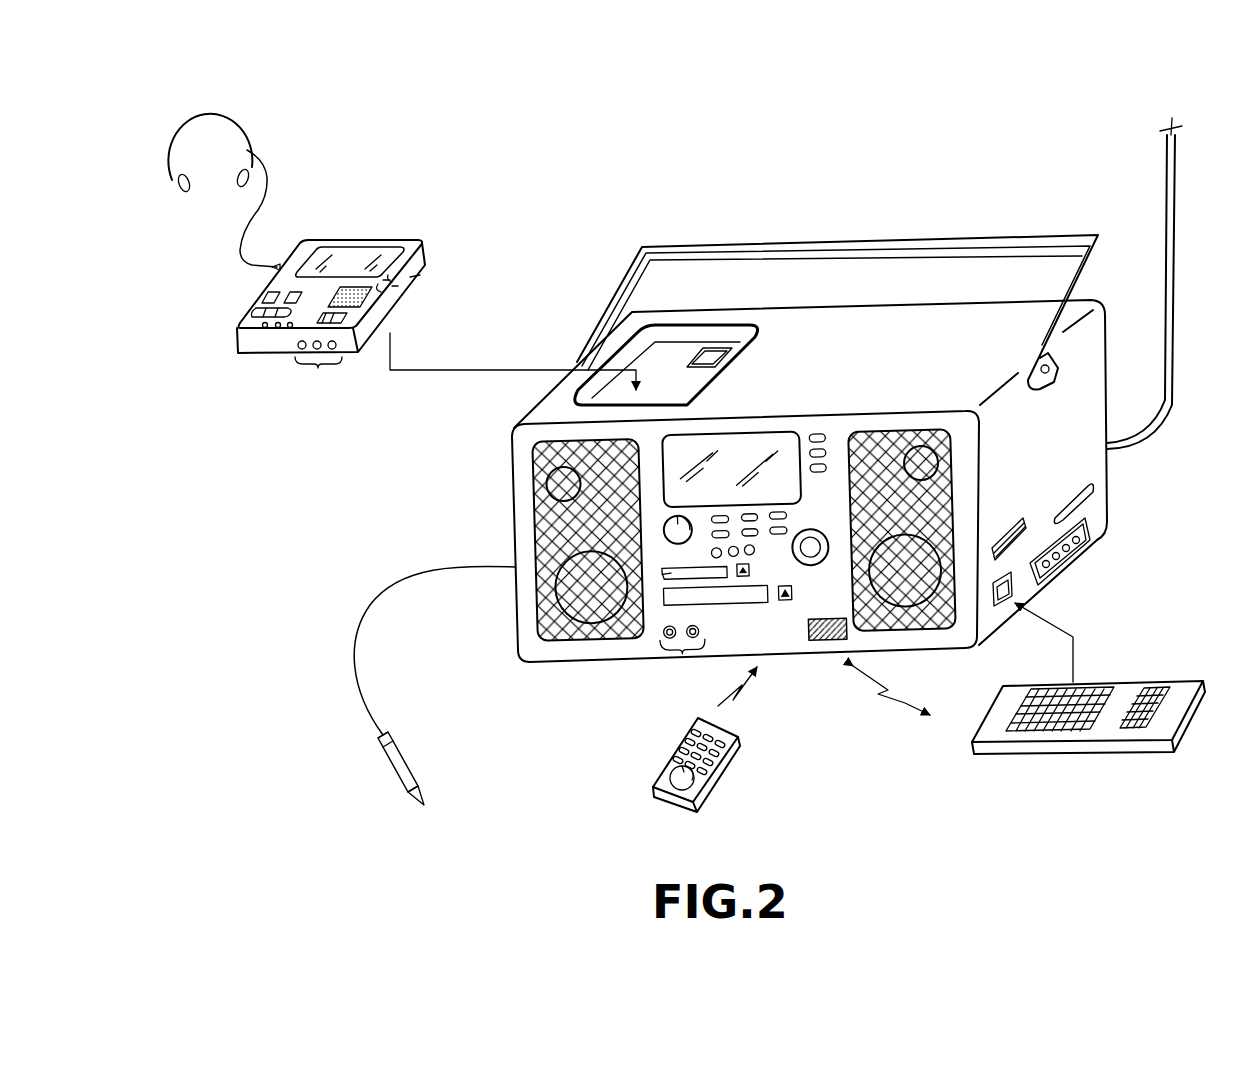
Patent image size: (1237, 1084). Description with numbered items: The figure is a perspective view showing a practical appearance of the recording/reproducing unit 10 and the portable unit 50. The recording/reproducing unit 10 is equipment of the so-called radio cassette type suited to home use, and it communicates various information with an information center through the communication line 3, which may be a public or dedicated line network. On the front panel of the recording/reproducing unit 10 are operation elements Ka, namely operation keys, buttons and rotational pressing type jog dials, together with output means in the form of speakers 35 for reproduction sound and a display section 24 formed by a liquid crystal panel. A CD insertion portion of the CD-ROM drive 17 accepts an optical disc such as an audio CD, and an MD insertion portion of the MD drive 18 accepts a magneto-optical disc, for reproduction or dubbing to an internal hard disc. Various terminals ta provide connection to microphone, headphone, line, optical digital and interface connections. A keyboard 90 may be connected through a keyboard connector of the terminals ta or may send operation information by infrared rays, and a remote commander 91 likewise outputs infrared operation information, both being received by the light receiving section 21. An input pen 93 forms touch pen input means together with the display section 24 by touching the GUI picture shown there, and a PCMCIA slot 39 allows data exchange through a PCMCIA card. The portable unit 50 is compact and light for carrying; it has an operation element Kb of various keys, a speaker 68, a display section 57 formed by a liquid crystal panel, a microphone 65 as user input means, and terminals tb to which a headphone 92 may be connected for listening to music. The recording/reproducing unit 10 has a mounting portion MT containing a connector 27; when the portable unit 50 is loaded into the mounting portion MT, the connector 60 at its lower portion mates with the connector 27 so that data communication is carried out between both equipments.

The recording/reproducing unit 10 is at (748, 218).
The communication line 3 is at (1180, 196).
The CD-ROM drive 17 is at (725, 597).
The MD drive 18 is at (660, 575).
The light receiving section 21 is at (826, 644).
The display section 24 is at (753, 452).
The connector 27 is at (703, 349).
The speakers 35 is at (913, 455).
The PCMCIA slot 39 is at (1010, 518).
The portable unit 50 is at (337, 280).
The display section 57 is at (387, 253).
The connector 60 is at (423, 278).
The microphone 65 is at (345, 327).
The speaker 68 is at (365, 295).
The keyboard 90 is at (1130, 690).
The remote commander 91 is at (713, 765).
The headphone 92 is at (242, 133).
The input pen 93 is at (398, 752).
The operation elements Ka is at (800, 506).
The operation element Kb is at (262, 294).
The terminals ta is at (680, 653).
The terminals tb is at (318, 372).
The mounting portion MT is at (612, 388).